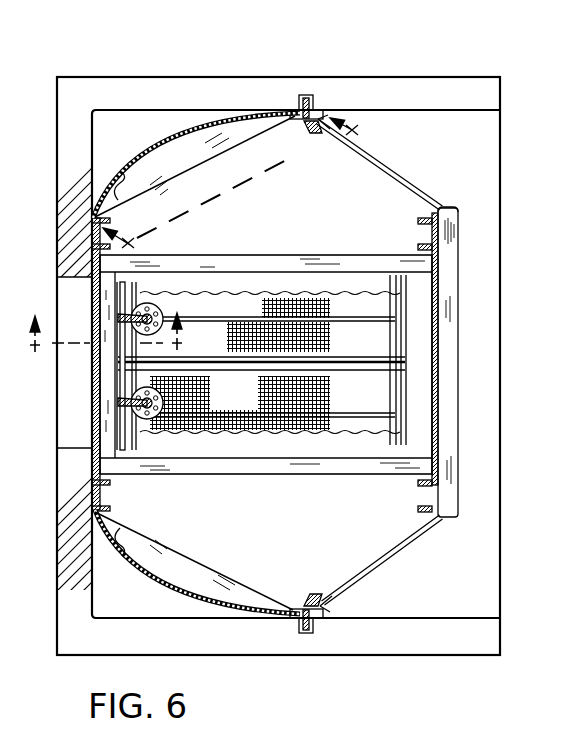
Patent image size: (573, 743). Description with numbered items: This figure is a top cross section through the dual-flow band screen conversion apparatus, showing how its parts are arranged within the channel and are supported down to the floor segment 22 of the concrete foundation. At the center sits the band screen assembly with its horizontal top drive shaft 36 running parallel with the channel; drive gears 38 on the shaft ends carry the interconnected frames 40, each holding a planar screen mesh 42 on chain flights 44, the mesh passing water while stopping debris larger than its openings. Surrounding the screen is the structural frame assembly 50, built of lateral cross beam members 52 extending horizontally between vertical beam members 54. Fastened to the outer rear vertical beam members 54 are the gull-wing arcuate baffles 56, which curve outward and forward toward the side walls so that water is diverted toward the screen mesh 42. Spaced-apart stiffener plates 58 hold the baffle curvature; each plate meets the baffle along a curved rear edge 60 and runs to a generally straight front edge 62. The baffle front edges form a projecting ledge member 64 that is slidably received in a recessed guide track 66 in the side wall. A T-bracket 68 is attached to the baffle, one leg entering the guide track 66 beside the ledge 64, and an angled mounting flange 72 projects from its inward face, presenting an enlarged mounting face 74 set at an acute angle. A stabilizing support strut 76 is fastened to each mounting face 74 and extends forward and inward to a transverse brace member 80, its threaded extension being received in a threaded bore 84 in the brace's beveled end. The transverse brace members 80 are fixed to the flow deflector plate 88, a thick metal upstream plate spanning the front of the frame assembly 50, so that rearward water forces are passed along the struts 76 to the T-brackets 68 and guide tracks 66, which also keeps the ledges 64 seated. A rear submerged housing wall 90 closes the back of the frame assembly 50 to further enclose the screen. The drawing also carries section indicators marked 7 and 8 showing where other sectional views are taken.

The floor segment 22 is at (473, 594).
The top drive shaft 36 is at (325, 372).
The drive gears 38 is at (93, 440).
The interconnected frames 40 is at (390, 347).
The screen mesh 42 is at (252, 297).
The chain flights 44 is at (87, 403).
The structural frame assembly 50 is at (248, 251).
The lateral cross beam members 52 is at (328, 249).
The vertical beam members 54 is at (110, 222).
The arcuate baffles 56 is at (216, 128).
The stiffener plates 58 is at (143, 197).
The curved rear edges 60 is at (122, 172).
The straight front edge 62 is at (203, 166).
The projecting ledge member 64 is at (302, 95).
The recessed guide track 66 is at (308, 97).
The T-bracket 68 is at (320, 112).
The mounting flange 72 is at (307, 127).
The mounting face 74 is at (318, 133).
The stabilizing support strut 76 is at (392, 172).
The transverse brace member 80 is at (463, 250).
The threaded bores 84 is at (448, 207).
The flow deflector plate 88 is at (438, 303).
The rear submerged housing wall 90 is at (93, 302).
The section line 7 is at (241, 188).
The section line 8 is at (105, 335).